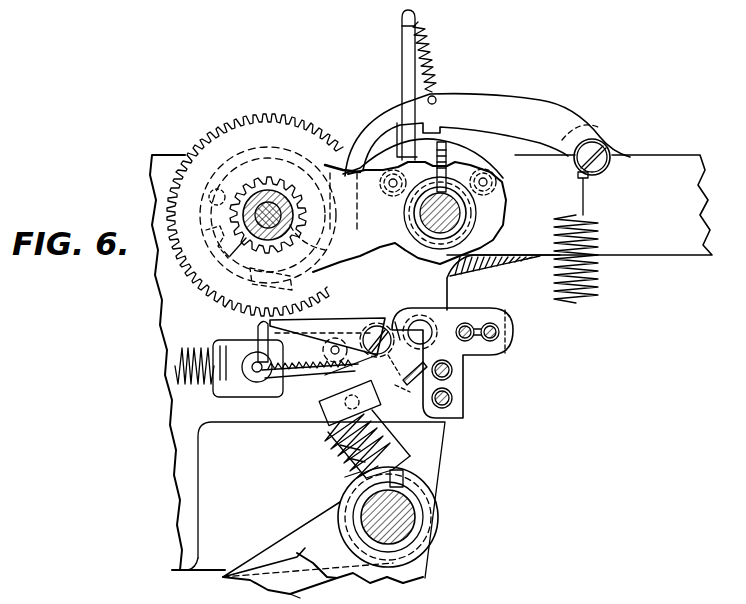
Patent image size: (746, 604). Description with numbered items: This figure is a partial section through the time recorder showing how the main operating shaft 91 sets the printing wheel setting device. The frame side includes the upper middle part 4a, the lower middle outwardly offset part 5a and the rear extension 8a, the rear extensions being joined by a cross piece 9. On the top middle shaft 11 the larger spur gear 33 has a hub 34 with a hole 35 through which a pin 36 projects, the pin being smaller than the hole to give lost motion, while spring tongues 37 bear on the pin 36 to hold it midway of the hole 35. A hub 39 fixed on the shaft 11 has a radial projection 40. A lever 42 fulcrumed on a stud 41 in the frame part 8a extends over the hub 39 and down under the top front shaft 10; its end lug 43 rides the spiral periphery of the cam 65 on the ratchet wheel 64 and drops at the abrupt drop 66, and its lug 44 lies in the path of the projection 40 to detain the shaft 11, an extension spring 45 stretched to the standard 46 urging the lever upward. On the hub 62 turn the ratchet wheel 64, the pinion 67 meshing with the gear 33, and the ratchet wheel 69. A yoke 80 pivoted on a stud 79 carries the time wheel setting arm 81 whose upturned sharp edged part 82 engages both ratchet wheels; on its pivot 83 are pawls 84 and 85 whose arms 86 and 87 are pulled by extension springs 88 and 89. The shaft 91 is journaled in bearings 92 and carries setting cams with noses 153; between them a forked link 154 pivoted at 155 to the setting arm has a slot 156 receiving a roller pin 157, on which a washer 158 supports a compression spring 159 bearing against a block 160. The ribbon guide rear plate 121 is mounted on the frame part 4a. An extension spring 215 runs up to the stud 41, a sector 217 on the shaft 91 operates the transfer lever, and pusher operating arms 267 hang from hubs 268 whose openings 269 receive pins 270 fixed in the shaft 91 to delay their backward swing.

The upper middle part 4a is at (450, 300).
The lower middle outwardly offset part 5a is at (203, 570).
The rear extension 8a is at (655, 256).
The cross piece 9 is at (413, 378).
The top front shaft 10 is at (272, 200).
The top middle shaft 11 is at (420, 216).
The larger spur gear 33 is at (318, 151).
The hub 34 is at (470, 201).
The hole 35 is at (398, 190).
The pin 36 is at (445, 154).
The spring tongues 37 is at (393, 134).
The hub 39 is at (468, 228).
The radial projection 40 is at (406, 263).
The stud 41 is at (608, 170).
The lever 42 is at (544, 101).
The lug 43 is at (255, 280).
The lug 44 is at (437, 124).
The extension spring 45 is at (430, 70).
The standard 46 is at (402, 73).
The hub 62 is at (248, 240).
The ratchet wheel 64 is at (263, 117).
The cam 65 is at (273, 152).
The abrupt drop 66 is at (220, 236).
The pinion 67 is at (243, 191).
The ratchet wheel 69 is at (224, 128).
The stud 79 is at (420, 320).
The yoke 80 is at (508, 356).
The time wheel setting arm 81 is at (396, 320).
The upturned sharp edged part 82 is at (258, 326).
The pivot 83 is at (380, 320).
The pawl 84 is at (351, 318).
The pawl 85 is at (361, 318).
The downwardly extending arm 86 is at (404, 392).
The downwardly extending arm 87 is at (402, 366).
The extension spring 88 is at (290, 392).
The extension spring 89 is at (255, 384).
The main operating shaft 91 is at (412, 515).
The bearings 92 is at (430, 545).
The ribbon guide rear plate 121 is at (296, 593).
The noses 153 is at (396, 456).
The forked link 154 is at (346, 478).
The pivot 155 is at (322, 376).
The longitudinal slot 156 is at (345, 447).
The roller pin 157 is at (349, 460).
The washer 158 is at (396, 436).
The compression spring 159 is at (335, 432).
The block 160 is at (326, 405).
The extension spring 215 is at (598, 296).
The sector 217 is at (392, 581).
The operating arms 267 is at (272, 556).
The hubs 268 is at (431, 495).
The openings 269 is at (421, 483).
The pins 270 is at (404, 476).